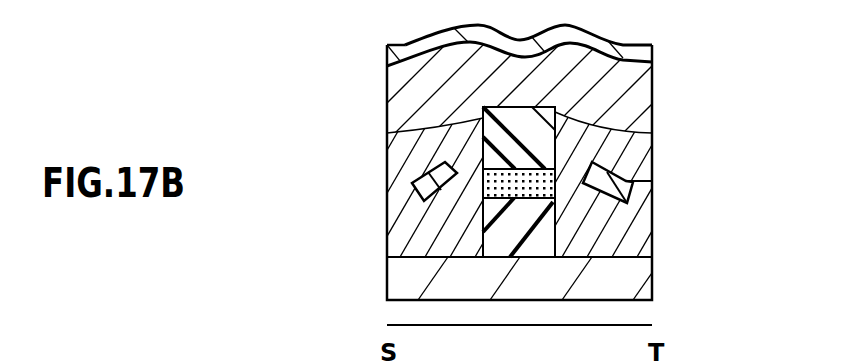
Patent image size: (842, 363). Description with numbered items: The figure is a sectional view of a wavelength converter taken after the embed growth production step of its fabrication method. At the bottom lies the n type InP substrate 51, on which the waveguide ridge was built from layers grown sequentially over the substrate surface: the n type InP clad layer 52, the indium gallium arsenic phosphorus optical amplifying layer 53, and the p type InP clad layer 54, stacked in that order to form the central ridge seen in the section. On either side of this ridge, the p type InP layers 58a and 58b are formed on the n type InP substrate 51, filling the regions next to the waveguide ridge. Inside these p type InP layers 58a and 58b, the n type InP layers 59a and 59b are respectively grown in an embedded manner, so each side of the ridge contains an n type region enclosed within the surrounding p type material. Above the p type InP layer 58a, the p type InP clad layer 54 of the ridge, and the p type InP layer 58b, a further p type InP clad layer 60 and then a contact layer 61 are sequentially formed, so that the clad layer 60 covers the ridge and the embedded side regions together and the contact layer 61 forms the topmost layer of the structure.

The n type InP substrate 51 is at (398, 268).
The n type InP clad layer 52 is at (533, 242).
The optical amplifying layer 53 is at (527, 172).
The p type InP clad layer 54 is at (557, 108).
The p type InP layer 58a is at (392, 161).
The p type InP layer 58b is at (632, 159).
The n type InP layer 59a is at (412, 186).
The n type InP layer 59b is at (633, 193).
The p type InP clad layer 60 is at (400, 103).
The contact layer 61 is at (388, 52).